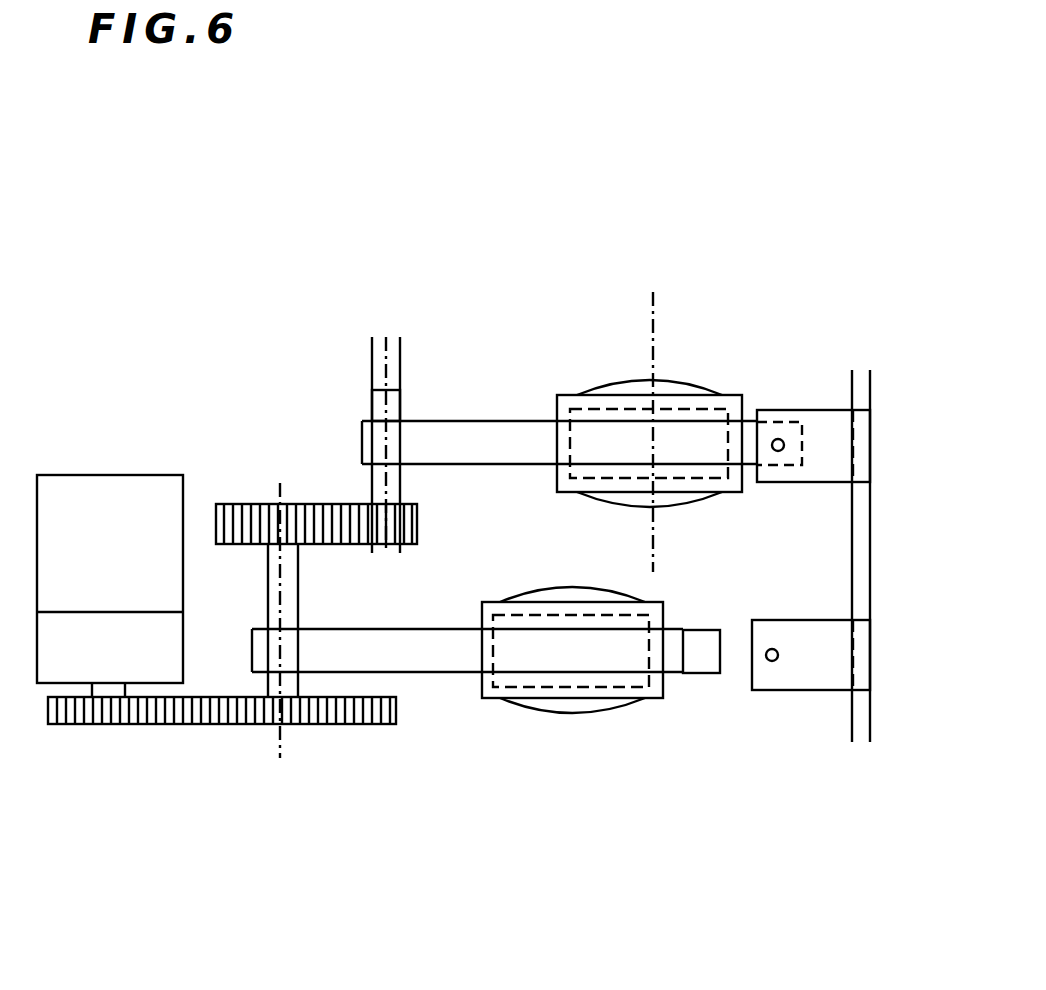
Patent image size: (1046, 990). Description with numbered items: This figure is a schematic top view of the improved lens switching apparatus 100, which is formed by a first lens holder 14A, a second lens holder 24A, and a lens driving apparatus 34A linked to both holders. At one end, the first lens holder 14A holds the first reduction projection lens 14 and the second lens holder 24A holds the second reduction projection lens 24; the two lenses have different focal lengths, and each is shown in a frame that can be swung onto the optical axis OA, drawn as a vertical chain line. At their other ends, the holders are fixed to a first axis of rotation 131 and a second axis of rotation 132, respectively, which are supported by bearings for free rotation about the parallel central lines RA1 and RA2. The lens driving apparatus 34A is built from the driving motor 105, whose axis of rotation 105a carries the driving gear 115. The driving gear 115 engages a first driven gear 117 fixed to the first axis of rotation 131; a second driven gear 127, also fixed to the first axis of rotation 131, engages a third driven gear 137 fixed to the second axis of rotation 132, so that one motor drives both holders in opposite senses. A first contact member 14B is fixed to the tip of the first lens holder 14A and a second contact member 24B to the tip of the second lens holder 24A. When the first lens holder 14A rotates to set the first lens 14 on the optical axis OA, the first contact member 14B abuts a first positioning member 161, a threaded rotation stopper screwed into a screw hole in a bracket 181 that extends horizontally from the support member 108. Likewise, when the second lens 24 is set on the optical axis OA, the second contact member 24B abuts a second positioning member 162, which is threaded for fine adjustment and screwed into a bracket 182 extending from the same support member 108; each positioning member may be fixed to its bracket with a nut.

The lens switching apparatus 100 is at (867, 248).
The optical axis OA is at (653, 308).
The central line of second axis of rotation RA2 is at (386, 350).
The central line of first axis of rotation RA1 is at (282, 487).
The third driven gear 137 is at (398, 545).
The second axis of rotation 132 is at (402, 398).
The second lens holder 24A is at (508, 428).
The second reduction projection lens 24 is at (677, 381).
The second contact member 24B is at (780, 422).
The second positioning member 162 is at (778, 453).
The bracket 182 is at (820, 462).
The support member 108 is at (860, 548).
The bracket 181 is at (793, 627).
The first positioning member 161 is at (772, 662).
The first contact member 14B is at (699, 660).
The first reduction projection lens 14 is at (458, 637).
The first lens holder 14A is at (565, 584).
The driving motor 105 is at (78, 483).
The axis of rotation of driving motor 105a is at (116, 690).
The second driven gear 127 is at (230, 503).
The first axis of rotation 131 is at (290, 606).
The driving gear 115 is at (102, 707).
The first driven gear 117 is at (350, 724).
The lens driving apparatus 34A is at (227, 862).